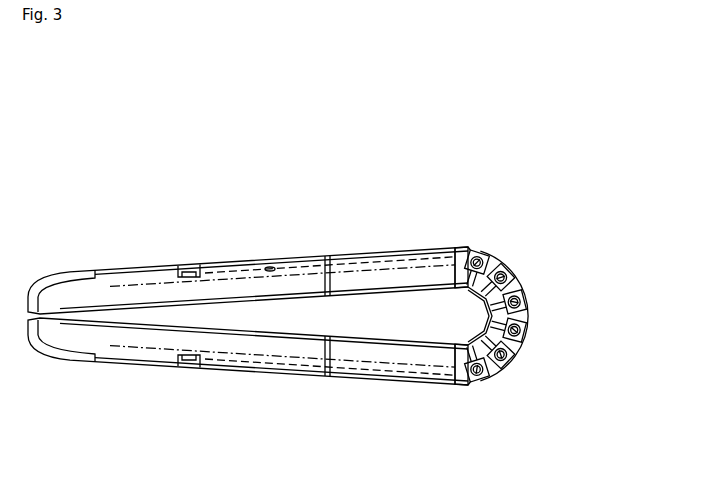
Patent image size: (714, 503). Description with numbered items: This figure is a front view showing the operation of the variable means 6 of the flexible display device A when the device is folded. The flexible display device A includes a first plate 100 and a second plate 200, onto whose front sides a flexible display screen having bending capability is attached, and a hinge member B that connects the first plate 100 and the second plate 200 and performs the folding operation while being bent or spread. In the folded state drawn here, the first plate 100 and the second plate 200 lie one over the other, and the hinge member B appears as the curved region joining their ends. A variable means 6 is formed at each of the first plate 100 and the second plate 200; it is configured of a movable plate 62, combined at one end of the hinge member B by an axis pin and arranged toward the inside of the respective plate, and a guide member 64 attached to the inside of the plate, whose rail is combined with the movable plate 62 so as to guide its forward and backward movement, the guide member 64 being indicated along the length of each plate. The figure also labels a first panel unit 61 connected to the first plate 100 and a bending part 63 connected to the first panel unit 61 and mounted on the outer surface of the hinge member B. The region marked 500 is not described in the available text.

The first plate 100 is at (118, 268).
The second plate 200 is at (134, 366).
The gap space between arms 500 is at (417, 338).
The variable means 6 is at (514, 305).
The first panel unit 61 is at (475, 252).
The movable plate 62 is at (183, 270).
The bending part 63 is at (517, 345).
The guide member 64 is at (297, 266).
The flexible display device A is at (434, 113).
The hinge member B is at (527, 314).